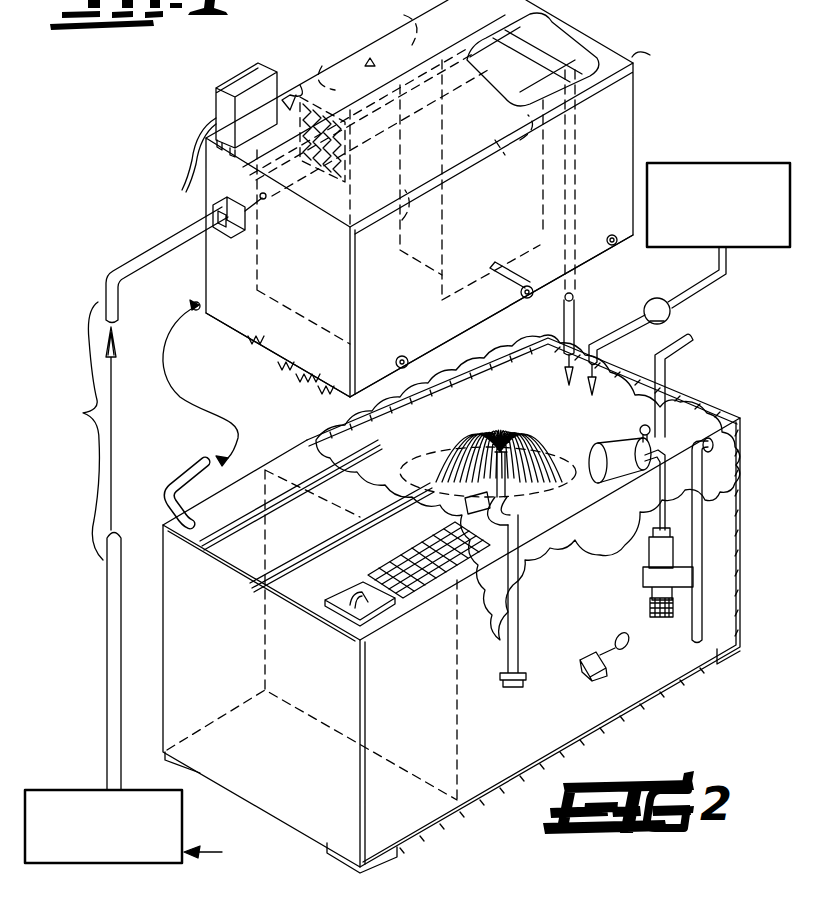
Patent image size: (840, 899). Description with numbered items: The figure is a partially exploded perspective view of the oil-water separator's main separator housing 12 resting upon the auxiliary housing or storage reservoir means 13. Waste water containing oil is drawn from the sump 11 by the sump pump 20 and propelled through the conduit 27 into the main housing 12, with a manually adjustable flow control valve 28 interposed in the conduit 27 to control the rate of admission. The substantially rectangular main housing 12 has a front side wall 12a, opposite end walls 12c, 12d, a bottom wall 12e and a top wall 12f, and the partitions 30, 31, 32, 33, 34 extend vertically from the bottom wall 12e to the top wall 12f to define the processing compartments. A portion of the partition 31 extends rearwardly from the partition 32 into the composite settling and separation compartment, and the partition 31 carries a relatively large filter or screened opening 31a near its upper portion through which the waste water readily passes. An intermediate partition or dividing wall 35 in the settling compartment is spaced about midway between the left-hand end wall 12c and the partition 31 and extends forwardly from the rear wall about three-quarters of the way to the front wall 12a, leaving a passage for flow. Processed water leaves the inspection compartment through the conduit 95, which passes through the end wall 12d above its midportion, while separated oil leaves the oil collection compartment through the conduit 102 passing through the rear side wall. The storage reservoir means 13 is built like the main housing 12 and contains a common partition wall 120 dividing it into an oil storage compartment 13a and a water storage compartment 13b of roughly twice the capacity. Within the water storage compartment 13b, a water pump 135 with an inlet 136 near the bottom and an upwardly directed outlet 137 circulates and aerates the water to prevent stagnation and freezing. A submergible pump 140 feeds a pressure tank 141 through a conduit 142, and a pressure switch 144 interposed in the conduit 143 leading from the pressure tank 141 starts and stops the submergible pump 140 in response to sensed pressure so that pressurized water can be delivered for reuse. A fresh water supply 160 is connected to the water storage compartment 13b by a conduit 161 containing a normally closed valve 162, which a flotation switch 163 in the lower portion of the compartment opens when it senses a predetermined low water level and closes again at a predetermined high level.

The sump 11 is at (220, 854).
The main separator housing 12 is at (456, 198).
The front side wall 12a is at (628, 121).
The left-hand end wall 12c is at (330, 294).
The end wall 12d is at (603, 36).
The bottom wall 12e is at (296, 372).
The top wall 12f is at (404, 76).
The auxiliary housing or storage reservoir means 13 is at (480, 504).
The oil storage compartment 13a is at (282, 787).
The water storage compartment 13b is at (728, 590).
The sump pump 20 is at (76, 786).
The conduit 27 is at (150, 254).
The manually adjustable flow control valve 28 is at (207, 262).
The partition 30 is at (372, 58).
The partition 31 is at (438, 247).
The filter or screened opening 31a is at (344, 120).
The partition 32 is at (495, 140).
The partition 33 is at (520, 74).
The partition 34 is at (522, 22).
The intermediate partition or dividing wall 35 is at (372, 263).
The conduit 95 is at (572, 300).
The conduit 102 is at (196, 300).
The common partition wall 120 is at (422, 740).
The water pump 135 is at (508, 517).
The inlet 136 is at (524, 676).
The outlet 137 is at (516, 446).
The submergible pump 140 is at (650, 553).
The pressure tank 141 is at (623, 446).
The conduit 142 is at (650, 478).
The conduit 143 is at (688, 340).
The pressure switch 144 is at (683, 398).
The fresh water supply 160 is at (742, 166).
The conduit 161 is at (726, 276).
The valve 162 is at (657, 298).
The flotation switch 163 is at (592, 661).